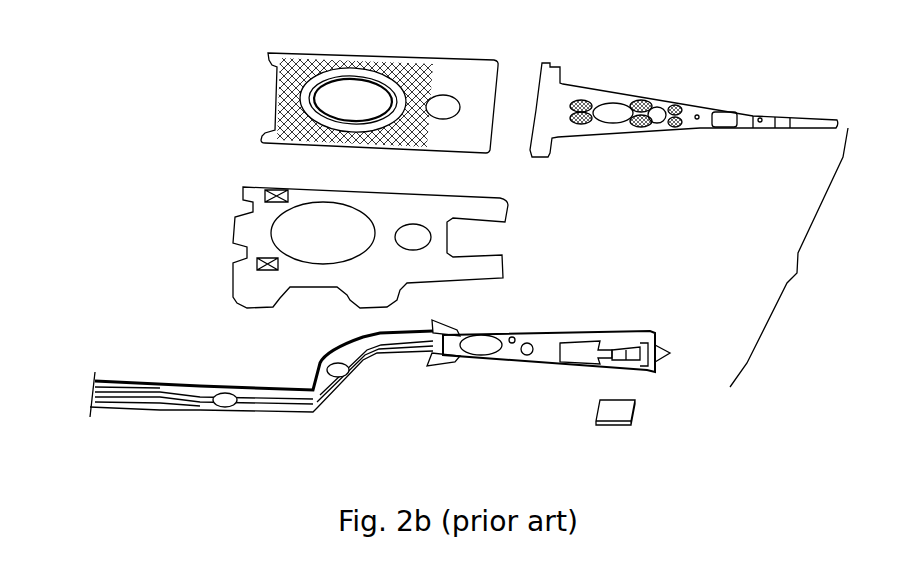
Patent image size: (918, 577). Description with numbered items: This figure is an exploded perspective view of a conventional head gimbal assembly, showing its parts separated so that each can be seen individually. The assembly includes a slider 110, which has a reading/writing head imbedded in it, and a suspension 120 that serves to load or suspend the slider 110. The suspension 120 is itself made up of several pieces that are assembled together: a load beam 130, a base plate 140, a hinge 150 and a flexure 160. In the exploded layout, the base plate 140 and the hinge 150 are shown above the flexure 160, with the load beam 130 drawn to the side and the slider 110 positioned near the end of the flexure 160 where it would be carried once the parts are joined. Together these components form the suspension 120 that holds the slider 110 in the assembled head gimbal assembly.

The slider 110 is at (620, 421).
The suspension 120 is at (789, 257).
The load beam 130 is at (602, 98).
The base plate 140 is at (438, 82).
The hinge 150 is at (265, 232).
The flexure 160 is at (513, 348).